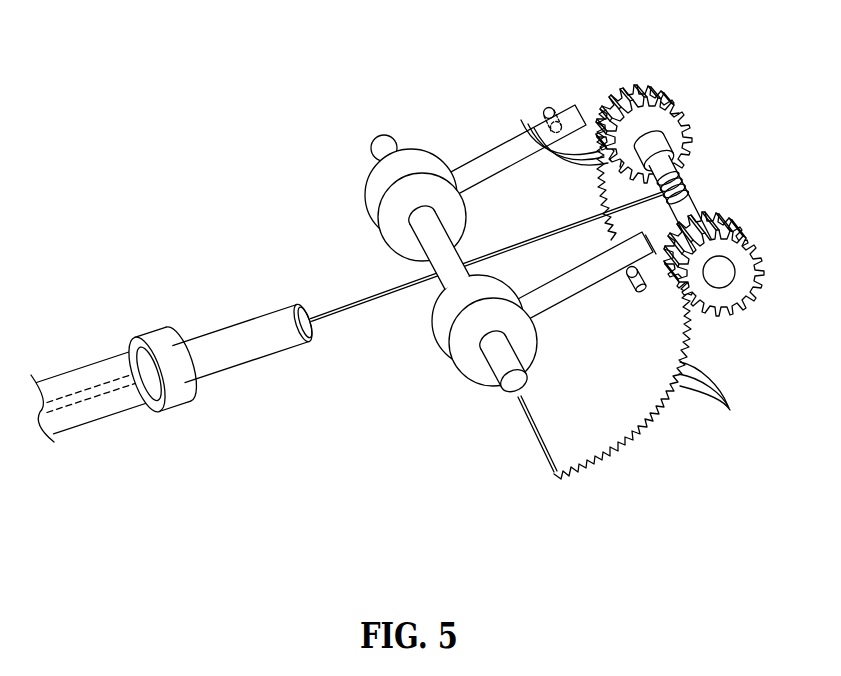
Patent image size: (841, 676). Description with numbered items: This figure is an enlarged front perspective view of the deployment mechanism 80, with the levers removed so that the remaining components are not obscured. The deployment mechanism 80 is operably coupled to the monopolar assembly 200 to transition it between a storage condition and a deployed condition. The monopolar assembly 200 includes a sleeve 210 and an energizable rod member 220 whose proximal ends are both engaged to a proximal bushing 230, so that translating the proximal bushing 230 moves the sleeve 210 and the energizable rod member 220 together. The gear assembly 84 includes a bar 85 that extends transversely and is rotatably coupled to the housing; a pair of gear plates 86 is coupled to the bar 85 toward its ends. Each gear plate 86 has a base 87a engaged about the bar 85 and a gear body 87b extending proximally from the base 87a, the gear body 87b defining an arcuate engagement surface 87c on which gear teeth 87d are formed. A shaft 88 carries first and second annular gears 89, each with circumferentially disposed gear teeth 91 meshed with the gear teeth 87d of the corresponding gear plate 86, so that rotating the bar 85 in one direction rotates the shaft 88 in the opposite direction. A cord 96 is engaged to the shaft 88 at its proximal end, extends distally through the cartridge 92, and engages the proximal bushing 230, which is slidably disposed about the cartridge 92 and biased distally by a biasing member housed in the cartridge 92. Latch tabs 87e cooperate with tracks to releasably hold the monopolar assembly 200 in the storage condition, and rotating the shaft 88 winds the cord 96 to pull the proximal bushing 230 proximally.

The deployment mechanism 80 is at (417, 304).
The gear assembly 84 is at (554, 304).
The bar 85 is at (465, 317).
The gear plate 86 is at (599, 269).
The base 87a is at (372, 196).
The gear body 87b is at (480, 196).
The arcuate engagement surface 87c is at (585, 98).
The gear teeth 87d is at (535, 130).
The latch tab 87e is at (549, 110).
The shaft 88 is at (730, 277).
The annular gear 89 is at (704, 171).
The gear teeth 91 is at (622, 98).
The cartridge 92 is at (252, 328).
The cord 96 is at (346, 310).
The monopolar assembly 200 is at (169, 384).
The sleeve 210 is at (83, 380).
The energizable rod member 220 is at (75, 404).
The proximal bushing 230 is at (163, 342).